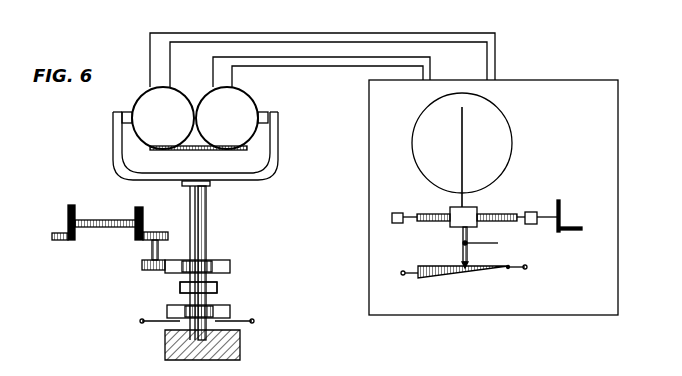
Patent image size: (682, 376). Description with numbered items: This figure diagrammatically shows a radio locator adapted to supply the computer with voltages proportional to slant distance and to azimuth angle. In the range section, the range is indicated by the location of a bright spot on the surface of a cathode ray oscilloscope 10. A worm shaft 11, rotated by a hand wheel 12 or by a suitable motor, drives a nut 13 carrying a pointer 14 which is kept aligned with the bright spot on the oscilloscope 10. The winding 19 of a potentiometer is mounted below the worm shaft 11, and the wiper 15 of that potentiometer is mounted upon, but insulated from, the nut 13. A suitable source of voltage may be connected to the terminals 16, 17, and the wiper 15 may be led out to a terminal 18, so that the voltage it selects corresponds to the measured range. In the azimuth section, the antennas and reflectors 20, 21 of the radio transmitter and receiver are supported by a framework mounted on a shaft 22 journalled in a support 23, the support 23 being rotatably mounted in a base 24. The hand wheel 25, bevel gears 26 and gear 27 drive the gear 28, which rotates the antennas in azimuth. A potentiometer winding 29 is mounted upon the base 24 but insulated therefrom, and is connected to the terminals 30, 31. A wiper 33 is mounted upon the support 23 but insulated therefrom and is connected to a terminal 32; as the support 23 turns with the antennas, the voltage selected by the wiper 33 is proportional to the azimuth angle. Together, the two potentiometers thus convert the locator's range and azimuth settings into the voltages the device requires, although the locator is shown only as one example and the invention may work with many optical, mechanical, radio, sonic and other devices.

The cathode ray oscilloscope 10 is at (512, 140).
The worm shaft 11 is at (510, 215).
The hand wheel 12 is at (572, 227).
The nut 13 is at (473, 210).
The pointer 14 is at (465, 138).
The wiper 15 is at (462, 251).
The terminal 16 is at (401, 271).
The terminal 17 is at (526, 267).
The terminal 18 is at (484, 236).
The winding 19 is at (428, 283).
The antenna and reflector 20 is at (163, 118).
The antenna and reflector 21 is at (227, 118).
The shaft 22 is at (265, 112).
The support 23 is at (278, 158).
The base 24 is at (167, 347).
The hand wheel 25 is at (58, 232).
The bevel gears 26 is at (148, 230).
The gear 27 is at (142, 266).
The gear 28 is at (217, 260).
The potentiometer winding 29 is at (177, 307).
The terminal 30 is at (247, 323).
The terminal 31 is at (152, 325).
The terminal 32 is at (217, 289).
The wiper 33 is at (217, 290).